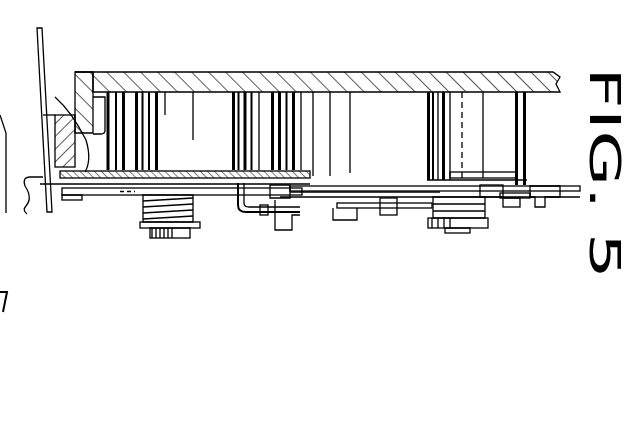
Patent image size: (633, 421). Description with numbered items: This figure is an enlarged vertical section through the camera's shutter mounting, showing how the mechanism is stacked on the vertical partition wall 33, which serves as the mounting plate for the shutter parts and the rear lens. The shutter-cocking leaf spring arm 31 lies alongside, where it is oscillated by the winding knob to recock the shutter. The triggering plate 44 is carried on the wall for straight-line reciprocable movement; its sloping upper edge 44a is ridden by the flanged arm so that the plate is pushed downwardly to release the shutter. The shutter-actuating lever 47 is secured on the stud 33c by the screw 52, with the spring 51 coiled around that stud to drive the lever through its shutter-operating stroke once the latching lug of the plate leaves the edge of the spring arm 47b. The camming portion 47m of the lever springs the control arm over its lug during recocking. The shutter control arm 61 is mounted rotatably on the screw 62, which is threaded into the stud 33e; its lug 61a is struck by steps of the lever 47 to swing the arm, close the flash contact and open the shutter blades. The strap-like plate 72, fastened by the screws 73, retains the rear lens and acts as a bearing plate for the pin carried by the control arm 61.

The shutter-cocking leaf spring arm 31 is at (37, 80).
The vertical partition wall 33 is at (207, 82).
The stud 33c is at (172, 106).
The stud 33e is at (450, 143).
The triggering plate 44 is at (212, 173).
The sloping upper edge 44a is at (27, 227).
The shutter-actuating lever 47 is at (103, 182).
The spring arm 47b is at (281, 205).
The camming portion 47m is at (343, 210).
The spring 51 is at (198, 208).
The screw 52 is at (180, 232).
The shutter control arm 61 is at (500, 208).
The lug 61a is at (372, 212).
The screw 62 is at (469, 232).
The strap-like plate 72 is at (533, 207).
The screws 73 is at (517, 207).